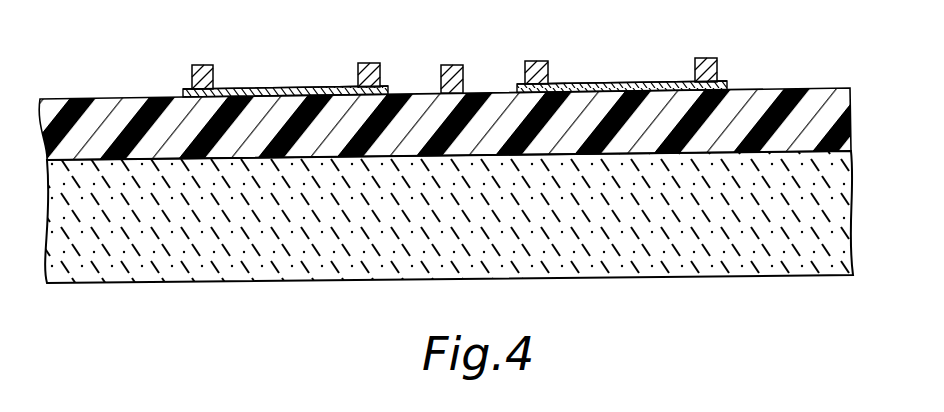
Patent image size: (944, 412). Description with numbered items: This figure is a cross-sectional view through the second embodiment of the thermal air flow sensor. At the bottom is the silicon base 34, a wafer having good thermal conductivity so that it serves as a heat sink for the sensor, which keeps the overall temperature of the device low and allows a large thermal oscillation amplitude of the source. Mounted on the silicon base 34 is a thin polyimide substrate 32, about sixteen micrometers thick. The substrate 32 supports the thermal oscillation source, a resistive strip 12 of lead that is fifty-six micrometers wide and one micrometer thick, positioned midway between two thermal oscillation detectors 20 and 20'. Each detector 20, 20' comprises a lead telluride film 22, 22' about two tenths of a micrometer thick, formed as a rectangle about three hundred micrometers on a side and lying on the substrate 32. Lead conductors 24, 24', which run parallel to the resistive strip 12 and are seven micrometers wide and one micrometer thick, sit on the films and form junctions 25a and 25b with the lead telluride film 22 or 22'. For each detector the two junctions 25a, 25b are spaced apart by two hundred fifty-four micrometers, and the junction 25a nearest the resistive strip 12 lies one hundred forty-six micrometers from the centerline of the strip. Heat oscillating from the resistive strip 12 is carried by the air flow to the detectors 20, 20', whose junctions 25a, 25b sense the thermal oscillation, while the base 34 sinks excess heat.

The resistive strip 12 is at (463, 65).
The thermal oscillation detector 20 is at (623, 44).
The upstream detector 20' is at (285, 44).
The lead telluride film 22 is at (622, 50).
The lead telluride film 22' is at (285, 54).
The lead conductor 24 is at (643, 52).
The lead conductor 24' is at (277, 54).
The junction 25a is at (357, 87).
The junction 25b is at (217, 88).
The polyimide substrate 32 is at (138, 105).
The silicon base 34 is at (223, 243).